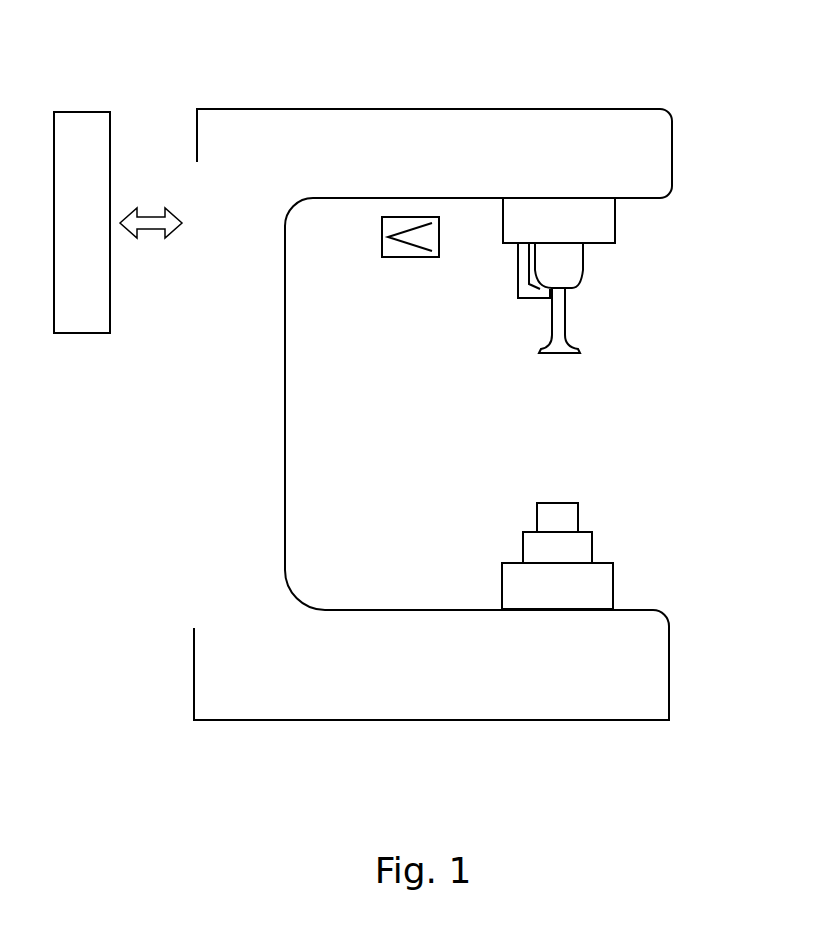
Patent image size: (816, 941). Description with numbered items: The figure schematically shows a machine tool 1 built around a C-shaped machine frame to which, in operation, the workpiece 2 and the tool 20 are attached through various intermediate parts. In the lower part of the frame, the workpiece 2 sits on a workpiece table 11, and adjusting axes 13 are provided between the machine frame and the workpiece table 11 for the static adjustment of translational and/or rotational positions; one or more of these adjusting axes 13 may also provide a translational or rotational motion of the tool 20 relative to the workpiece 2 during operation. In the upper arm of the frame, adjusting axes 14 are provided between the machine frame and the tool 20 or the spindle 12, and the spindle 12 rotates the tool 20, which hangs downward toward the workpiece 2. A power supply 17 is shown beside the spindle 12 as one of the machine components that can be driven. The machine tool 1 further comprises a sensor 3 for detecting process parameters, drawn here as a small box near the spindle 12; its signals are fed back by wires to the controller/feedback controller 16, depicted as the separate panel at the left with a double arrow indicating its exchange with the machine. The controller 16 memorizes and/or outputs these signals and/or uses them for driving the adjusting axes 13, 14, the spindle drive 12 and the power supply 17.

The machine tool 1 is at (458, 60).
The workpiece 2 is at (573, 515).
The sensor 3 is at (395, 258).
The workpiece table 11 is at (585, 548).
The spindle 12 is at (577, 260).
The adjusting axes 13 is at (603, 595).
The adjusting axes 14 is at (607, 216).
The controller/feedback controller 16 is at (80, 122).
The power supply 17 is at (517, 290).
The tool 20 is at (573, 338).